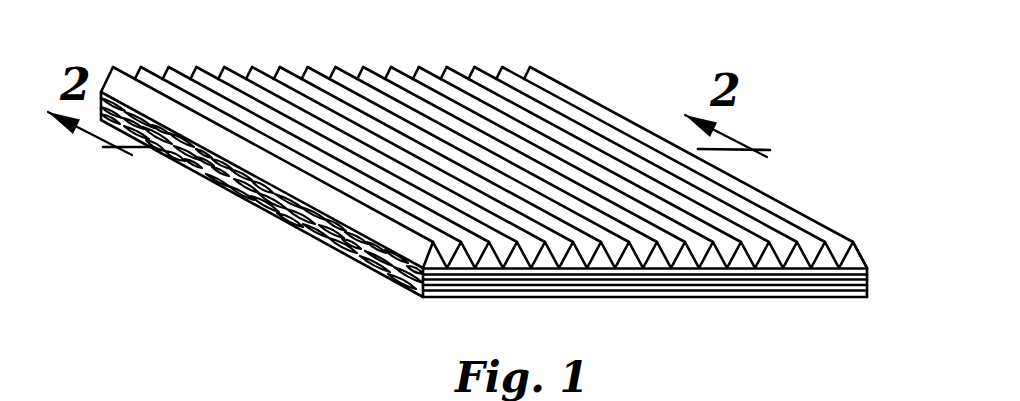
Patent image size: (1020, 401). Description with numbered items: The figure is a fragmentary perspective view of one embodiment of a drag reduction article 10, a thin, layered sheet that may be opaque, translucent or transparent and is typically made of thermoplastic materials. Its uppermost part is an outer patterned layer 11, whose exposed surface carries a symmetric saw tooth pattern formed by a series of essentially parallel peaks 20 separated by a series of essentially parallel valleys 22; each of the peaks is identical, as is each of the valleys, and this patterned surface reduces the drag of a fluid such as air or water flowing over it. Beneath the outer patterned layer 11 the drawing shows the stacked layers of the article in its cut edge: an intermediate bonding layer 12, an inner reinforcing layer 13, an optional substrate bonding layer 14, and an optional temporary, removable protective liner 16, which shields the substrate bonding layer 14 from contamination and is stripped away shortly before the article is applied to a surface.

The drag reduction article 10 is at (642, 70).
The outer patterned layer 11 is at (856, 259).
The intermediate bonding layer 12 is at (867, 276).
The inner reinforcing layer 13 is at (867, 283).
The substrate bonding layer 14 is at (817, 288).
The temporary removable protective liner 16 is at (690, 293).
The peaks 20 is at (557, 83).
The valleys 22 is at (840, 265).